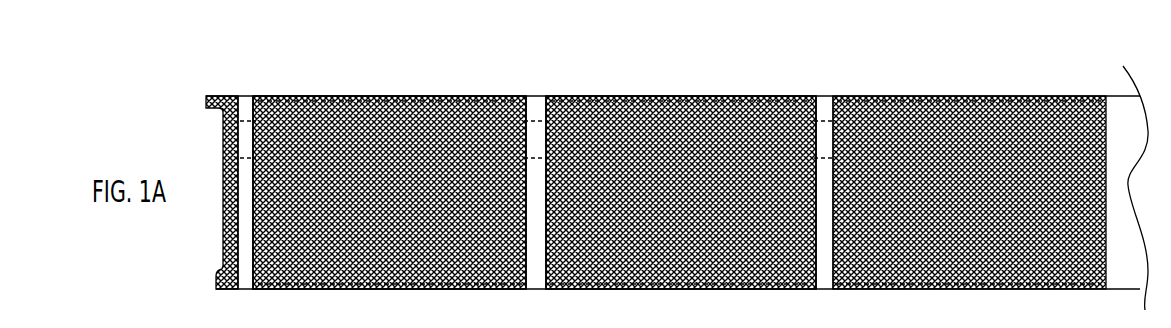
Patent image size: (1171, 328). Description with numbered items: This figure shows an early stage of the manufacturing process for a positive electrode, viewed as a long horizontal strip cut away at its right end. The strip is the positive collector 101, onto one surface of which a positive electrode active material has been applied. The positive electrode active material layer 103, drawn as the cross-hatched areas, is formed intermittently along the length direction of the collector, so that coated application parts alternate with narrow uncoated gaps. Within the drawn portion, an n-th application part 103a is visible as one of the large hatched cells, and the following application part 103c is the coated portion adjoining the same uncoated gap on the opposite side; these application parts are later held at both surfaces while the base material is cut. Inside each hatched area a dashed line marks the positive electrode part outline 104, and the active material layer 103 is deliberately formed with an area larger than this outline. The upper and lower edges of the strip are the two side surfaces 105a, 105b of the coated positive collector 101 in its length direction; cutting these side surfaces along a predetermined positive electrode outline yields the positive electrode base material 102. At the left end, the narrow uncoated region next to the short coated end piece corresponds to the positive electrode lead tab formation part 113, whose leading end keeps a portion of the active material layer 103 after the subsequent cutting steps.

The positive collector 101 is at (528, 95).
The positive electrode base material 102 is at (700, 197).
The positive electrode active material layer 103 is at (504, 84).
The n-th application part 103a is at (644, 212).
The (n+1)-th application part 103c is at (215, 212).
The positive electrode part outline 104 is at (433, 88).
The side surface 105a is at (395, 88).
The side surface 105b is at (415, 282).
The positive electrode lead tab formation part 113 is at (240, 117).